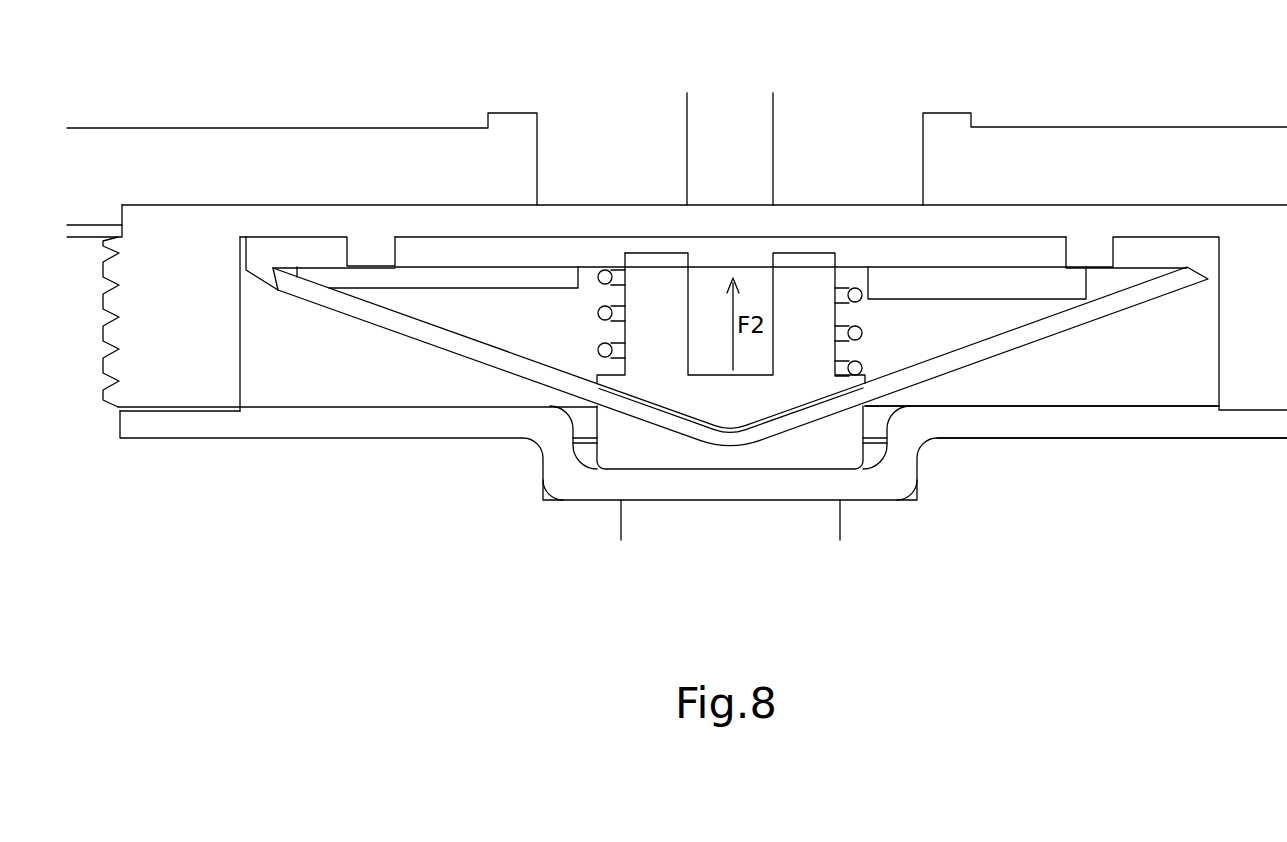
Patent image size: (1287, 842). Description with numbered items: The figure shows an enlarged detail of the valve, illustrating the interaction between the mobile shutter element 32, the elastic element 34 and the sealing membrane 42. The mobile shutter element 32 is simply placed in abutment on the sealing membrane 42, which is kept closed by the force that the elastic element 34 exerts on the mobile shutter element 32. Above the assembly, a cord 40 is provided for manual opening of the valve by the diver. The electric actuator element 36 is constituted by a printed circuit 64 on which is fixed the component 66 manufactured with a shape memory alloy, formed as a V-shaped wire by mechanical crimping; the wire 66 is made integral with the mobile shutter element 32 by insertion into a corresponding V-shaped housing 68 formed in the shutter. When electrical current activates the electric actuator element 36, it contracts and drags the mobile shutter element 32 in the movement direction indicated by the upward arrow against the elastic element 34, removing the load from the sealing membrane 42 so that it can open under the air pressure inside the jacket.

The mobile shutter element 32 is at (613, 453).
The elastic element 34 is at (856, 293).
The electric actuator element 36 is at (285, 292).
The cord 40 is at (753, 125).
The sealing membrane 42 is at (1021, 425).
The printed circuit 64 is at (433, 250).
The component manufactured with a shape memory alloy 66 is at (470, 352).
The housing 68 is at (800, 422).